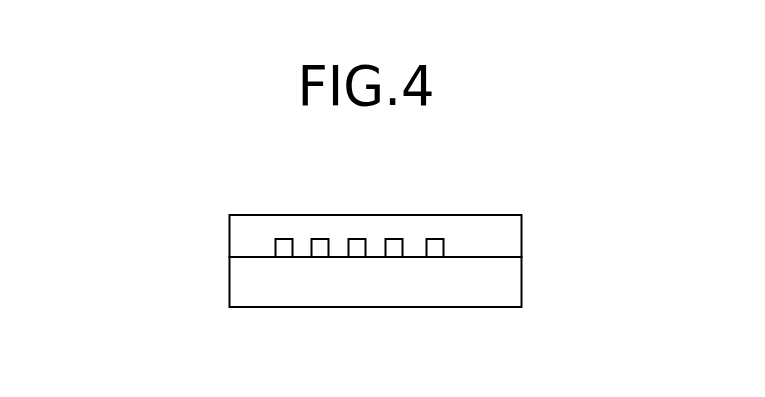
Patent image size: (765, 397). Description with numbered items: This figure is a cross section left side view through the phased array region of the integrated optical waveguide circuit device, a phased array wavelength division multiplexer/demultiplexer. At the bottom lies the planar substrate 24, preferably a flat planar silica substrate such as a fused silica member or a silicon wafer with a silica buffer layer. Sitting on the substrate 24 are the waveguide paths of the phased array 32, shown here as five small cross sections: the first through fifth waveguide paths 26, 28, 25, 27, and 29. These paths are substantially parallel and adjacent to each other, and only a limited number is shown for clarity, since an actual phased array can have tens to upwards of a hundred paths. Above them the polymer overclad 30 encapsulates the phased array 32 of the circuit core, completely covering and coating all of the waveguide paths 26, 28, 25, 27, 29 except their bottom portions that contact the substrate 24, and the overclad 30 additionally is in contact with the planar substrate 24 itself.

The planar substrate 24 is at (503, 292).
The polymer overclad 30 is at (503, 247).
The phased array 32 is at (236, 242).
The third waveguide path 25 is at (359, 239).
The first waveguide path 26 is at (437, 239).
The fourth waveguide path 27 is at (314, 239).
The second waveguide path 28 is at (395, 239).
The fifth waveguide path 29 is at (278, 239).